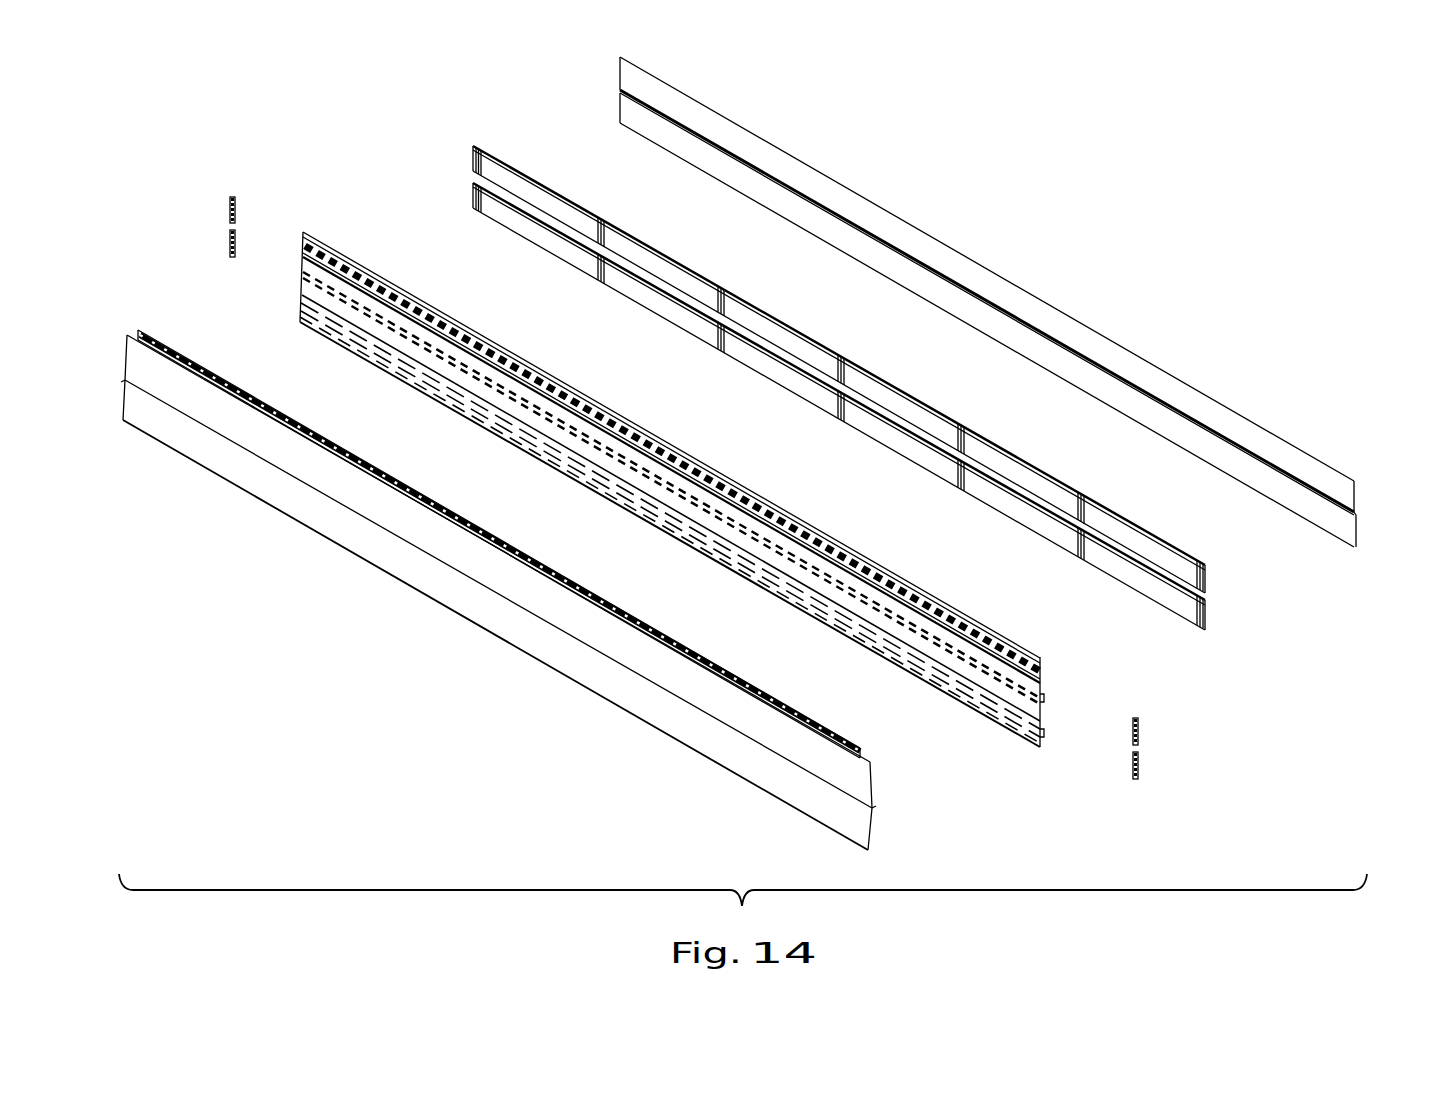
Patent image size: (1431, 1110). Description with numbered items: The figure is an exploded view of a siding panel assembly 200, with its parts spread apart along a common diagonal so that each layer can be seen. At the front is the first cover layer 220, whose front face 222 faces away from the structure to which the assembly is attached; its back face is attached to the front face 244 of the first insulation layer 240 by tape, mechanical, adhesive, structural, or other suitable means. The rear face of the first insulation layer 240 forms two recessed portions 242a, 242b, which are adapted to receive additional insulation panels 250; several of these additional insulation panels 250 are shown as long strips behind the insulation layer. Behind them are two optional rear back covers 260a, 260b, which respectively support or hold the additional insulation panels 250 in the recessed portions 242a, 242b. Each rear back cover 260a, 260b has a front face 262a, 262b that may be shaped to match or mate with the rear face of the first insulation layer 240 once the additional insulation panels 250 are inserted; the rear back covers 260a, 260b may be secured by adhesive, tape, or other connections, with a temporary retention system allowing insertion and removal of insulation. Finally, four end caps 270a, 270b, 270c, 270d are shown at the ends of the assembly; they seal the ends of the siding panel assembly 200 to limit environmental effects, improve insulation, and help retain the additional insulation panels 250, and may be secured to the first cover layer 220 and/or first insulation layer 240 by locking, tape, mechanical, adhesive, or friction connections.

The siding panel assembly 200 is at (288, 632).
The first cover layer 220 is at (562, 590).
The front face 222 is at (585, 663).
The first insulation layer 240 is at (626, 453).
The recessed portion 242a is at (678, 431).
The recessed portion 242b is at (320, 319).
The front face 244 is at (948, 630).
The additional insulation panel 250 is at (537, 192).
The rear back cover 260a is at (1020, 284).
The rear back cover 260b is at (1021, 358).
The front face 262a is at (1103, 348).
The front face 262b is at (1292, 498).
The end cap 270a is at (230, 207).
The end cap 270b is at (230, 247).
The end cap 270c is at (1139, 726).
The end cap 270d is at (1139, 760).